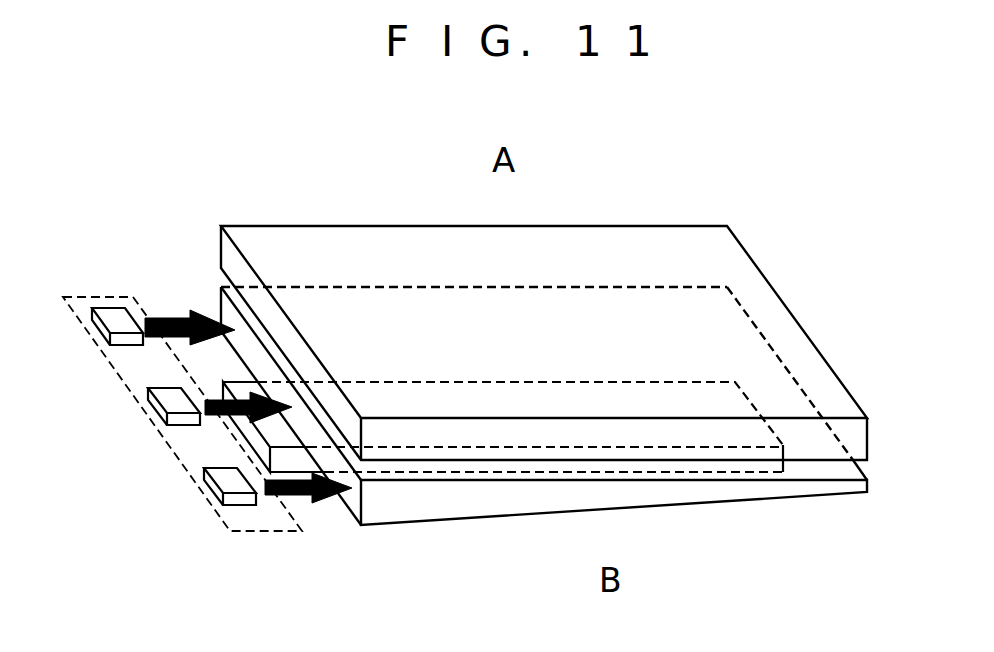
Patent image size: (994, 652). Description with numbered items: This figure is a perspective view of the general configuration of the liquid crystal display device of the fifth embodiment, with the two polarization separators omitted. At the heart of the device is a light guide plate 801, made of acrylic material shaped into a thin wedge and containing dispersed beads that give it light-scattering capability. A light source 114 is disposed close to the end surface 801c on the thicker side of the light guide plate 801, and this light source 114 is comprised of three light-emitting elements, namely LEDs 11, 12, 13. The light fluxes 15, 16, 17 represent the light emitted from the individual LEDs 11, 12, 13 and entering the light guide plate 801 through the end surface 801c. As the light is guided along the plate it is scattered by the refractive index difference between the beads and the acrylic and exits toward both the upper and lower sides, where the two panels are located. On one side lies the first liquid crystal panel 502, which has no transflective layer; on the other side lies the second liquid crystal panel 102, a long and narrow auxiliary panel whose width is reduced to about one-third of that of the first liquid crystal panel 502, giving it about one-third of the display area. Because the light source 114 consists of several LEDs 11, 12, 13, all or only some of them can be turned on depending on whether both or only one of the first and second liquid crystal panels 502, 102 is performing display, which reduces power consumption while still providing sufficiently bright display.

The light emitting diode 11 is at (95, 336).
The light emitting diode 12 is at (153, 416).
The light emitting diode 13 is at (208, 496).
The light flux 15 is at (167, 313).
The light flux 16 is at (210, 397).
The light flux 17 is at (310, 498).
The second liquid crystal panel 102 is at (245, 438).
The light source 114 is at (268, 531).
The first liquid crystal panel 502 is at (745, 272).
The light guide plate 801 is at (560, 354).
The end surface 801c is at (226, 312).